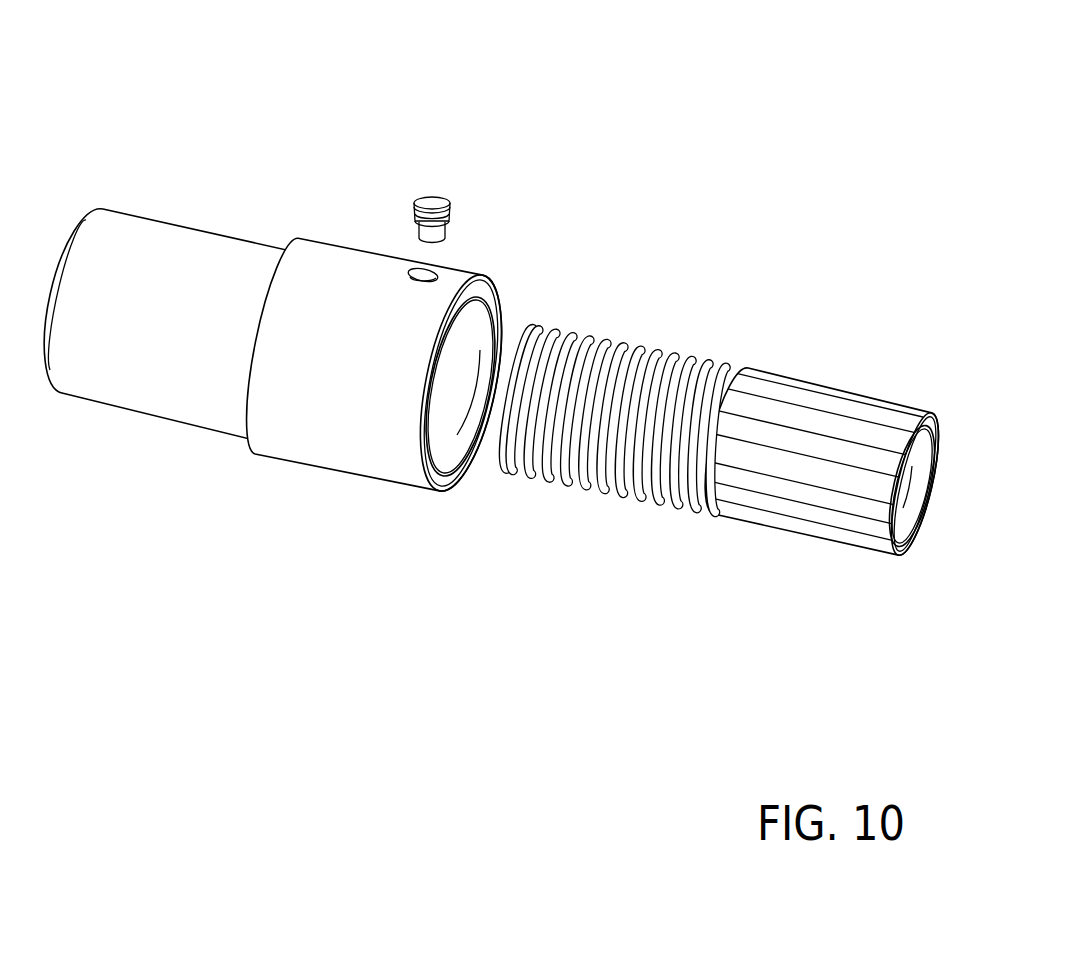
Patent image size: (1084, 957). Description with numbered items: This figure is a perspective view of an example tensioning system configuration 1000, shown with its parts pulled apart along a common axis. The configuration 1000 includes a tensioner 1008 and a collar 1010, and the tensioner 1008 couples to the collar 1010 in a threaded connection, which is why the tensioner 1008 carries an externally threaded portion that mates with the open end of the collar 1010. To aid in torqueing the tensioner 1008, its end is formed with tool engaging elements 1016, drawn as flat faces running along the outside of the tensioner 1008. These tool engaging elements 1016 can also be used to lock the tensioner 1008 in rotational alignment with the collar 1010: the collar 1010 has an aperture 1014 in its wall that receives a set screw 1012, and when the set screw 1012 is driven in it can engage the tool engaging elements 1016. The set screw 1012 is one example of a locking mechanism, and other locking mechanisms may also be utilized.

The tensioning system configuration 1000 is at (503, 346).
The tensioner 1008 is at (733, 477).
The collar 1010 is at (268, 487).
The set screw 1012 is at (438, 199).
The aperture 1014 is at (436, 268).
The tool engaging elements 1016 is at (863, 448).